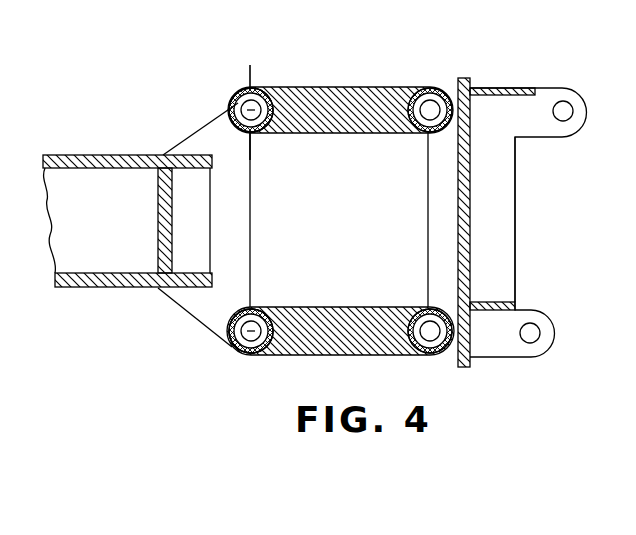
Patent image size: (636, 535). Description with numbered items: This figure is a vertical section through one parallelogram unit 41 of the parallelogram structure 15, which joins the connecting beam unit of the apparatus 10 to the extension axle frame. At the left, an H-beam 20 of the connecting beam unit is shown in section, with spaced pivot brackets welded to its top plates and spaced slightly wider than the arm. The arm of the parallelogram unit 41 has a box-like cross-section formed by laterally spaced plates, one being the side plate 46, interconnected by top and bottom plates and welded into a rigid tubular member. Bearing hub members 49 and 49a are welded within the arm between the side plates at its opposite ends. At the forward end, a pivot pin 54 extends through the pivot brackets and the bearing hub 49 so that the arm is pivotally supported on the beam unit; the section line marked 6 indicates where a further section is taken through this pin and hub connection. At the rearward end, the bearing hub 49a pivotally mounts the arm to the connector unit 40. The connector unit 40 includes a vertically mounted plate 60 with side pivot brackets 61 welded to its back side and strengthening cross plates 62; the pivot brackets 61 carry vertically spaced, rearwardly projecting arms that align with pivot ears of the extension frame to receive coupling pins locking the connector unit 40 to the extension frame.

The tubular device 10 is at (169, 4).
The parallelogram structure 15 is at (342, 221).
The H-beam 20 is at (127, 292).
The connector unit 40 is at (490, 84).
The parallelogram unit 41 is at (340, 73).
The side plate 46 is at (340, 92).
The bearing hub member 49 is at (272, 115).
The bearing hub member 49a is at (423, 125).
The pivot pin 54 is at (213, 88).
The vertical mounted plate 60 is at (472, 228).
The side pivot bracket 61 is at (553, 86).
The strengthening cross plate 62 is at (520, 97).
The section line 6- 6 is at (250, 70).